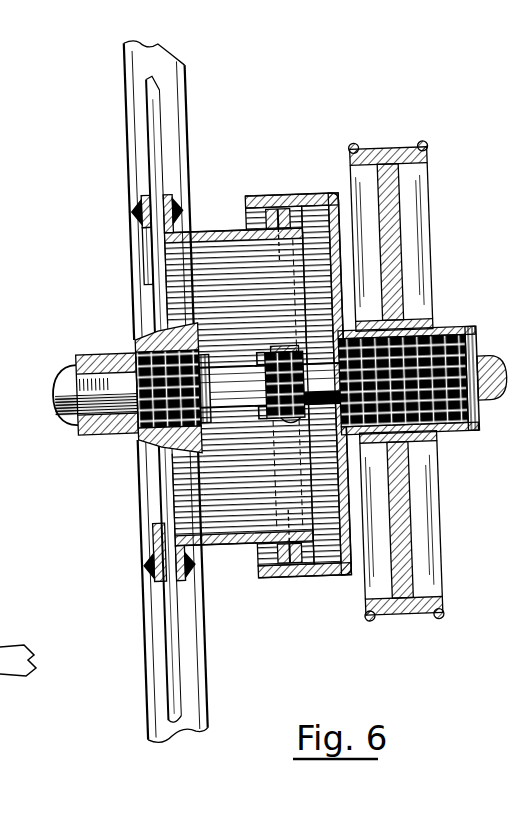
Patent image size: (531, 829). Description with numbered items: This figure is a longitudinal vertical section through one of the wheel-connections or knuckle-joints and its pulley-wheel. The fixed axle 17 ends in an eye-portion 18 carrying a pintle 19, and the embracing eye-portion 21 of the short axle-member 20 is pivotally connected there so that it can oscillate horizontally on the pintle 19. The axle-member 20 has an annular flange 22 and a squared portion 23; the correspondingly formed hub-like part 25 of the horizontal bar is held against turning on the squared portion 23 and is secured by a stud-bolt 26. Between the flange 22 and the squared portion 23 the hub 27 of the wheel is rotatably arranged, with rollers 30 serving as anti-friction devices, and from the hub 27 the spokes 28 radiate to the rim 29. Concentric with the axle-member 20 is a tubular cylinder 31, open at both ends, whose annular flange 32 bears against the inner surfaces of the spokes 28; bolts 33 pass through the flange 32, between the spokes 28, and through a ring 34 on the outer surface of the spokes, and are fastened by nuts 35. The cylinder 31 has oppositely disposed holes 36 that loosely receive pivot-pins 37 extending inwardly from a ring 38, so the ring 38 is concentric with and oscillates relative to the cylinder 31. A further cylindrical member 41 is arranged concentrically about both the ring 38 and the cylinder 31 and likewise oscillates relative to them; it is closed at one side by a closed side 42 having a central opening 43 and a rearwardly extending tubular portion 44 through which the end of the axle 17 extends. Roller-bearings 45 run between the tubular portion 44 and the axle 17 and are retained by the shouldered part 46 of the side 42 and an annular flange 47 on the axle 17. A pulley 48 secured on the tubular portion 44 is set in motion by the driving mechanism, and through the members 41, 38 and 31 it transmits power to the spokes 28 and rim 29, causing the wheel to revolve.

The axle 17 is at (480, 408).
The eye-portion 18 is at (246, 406).
The pintle 19 is at (275, 346).
The axle-member 20 is at (272, 385).
The eye-portion 21 is at (262, 356).
The annular flange 22 is at (190, 432).
The squared portion 23 is at (82, 380).
The hub-like part 25 is at (92, 352).
The stud-bolt 26 is at (56, 392).
The hub 27 is at (178, 334).
The spokes 28 is at (152, 130).
The rim 29 is at (172, 98).
The rollers 30 is at (140, 352).
The tubular cylinder 31 is at (215, 392).
The annular flange 32 is at (168, 203).
The bolts 33 is at (180, 212).
The ring 34 is at (150, 248).
The nuts 35 is at (136, 212).
The holes 36 is at (283, 241).
The pivot-pins 37 is at (279, 210).
The ring 38 is at (247, 214).
The cylindrical member 41 is at (303, 196).
The closed side 42 is at (344, 207).
The opening 43 is at (284, 362).
The tubular portion 44 is at (440, 333).
The roller-bearings 45 is at (447, 334).
The shouldered part 46 is at (330, 332).
The annular flange 47 is at (479, 346).
The pulley 48 is at (410, 212).